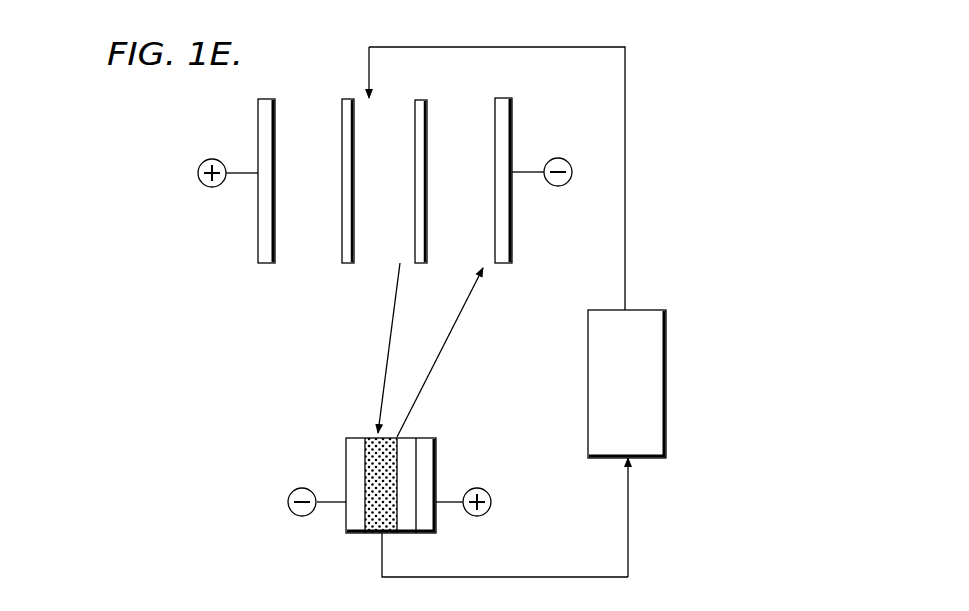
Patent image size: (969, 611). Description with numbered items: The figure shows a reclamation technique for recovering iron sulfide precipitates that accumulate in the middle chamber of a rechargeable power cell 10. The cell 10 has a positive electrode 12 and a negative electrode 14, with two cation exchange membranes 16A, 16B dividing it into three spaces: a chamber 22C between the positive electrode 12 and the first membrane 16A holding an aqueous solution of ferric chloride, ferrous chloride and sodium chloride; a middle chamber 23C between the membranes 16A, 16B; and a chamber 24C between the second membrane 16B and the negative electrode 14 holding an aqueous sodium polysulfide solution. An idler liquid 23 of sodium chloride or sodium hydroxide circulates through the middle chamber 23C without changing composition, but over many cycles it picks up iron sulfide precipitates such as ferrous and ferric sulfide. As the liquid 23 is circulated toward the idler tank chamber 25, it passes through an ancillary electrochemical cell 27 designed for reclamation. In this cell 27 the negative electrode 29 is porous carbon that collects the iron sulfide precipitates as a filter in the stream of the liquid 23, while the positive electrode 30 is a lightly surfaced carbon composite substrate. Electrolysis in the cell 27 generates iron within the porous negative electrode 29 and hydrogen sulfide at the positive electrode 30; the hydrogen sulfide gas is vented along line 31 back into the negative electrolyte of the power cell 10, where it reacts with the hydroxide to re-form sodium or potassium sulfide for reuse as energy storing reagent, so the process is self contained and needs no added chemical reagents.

The cell 10 is at (323, 73).
The positive electrode 12 is at (258, 217).
The negative electrode 14 is at (512, 220).
The cation exchange membrane 16A is at (342, 121).
The cation exchange membrane 16B is at (427, 107).
The chamber 22C is at (303, 190).
The middle chamber 23C is at (383, 190).
The chamber 24C is at (460, 190).
The liquid 23 is at (388, 342).
The idler tank chamber 25 is at (658, 397).
The ancillary electrochemical cell 27 is at (337, 452).
The negative electrode 29 is at (367, 515).
The positive electrode 30 is at (436, 443).
The line 31 is at (450, 338).